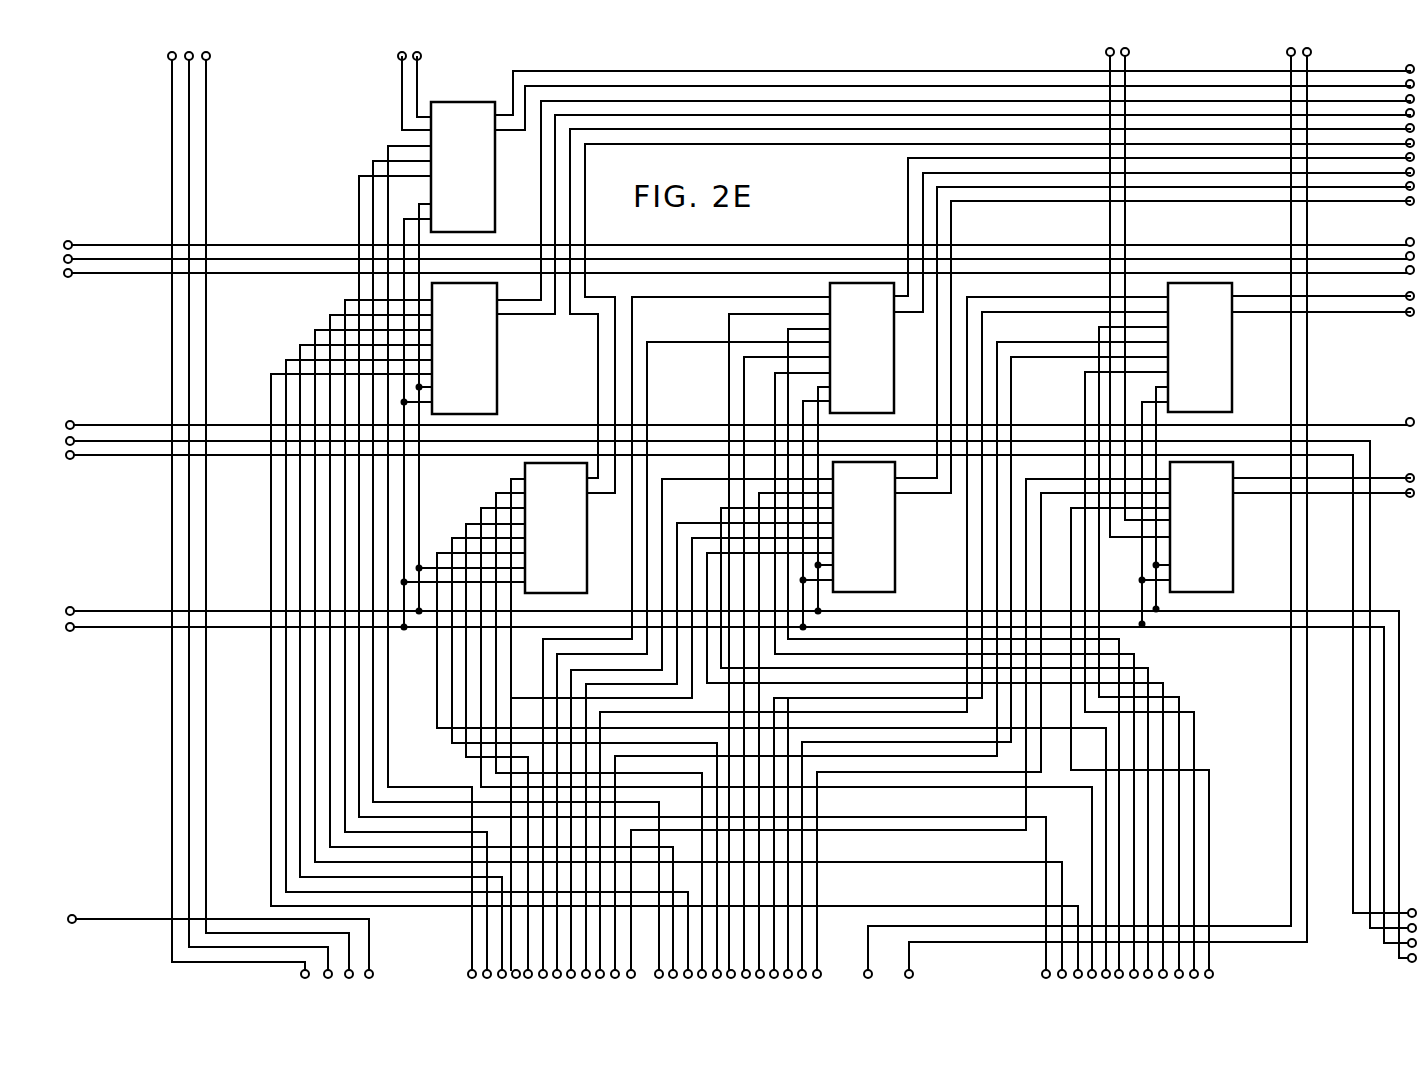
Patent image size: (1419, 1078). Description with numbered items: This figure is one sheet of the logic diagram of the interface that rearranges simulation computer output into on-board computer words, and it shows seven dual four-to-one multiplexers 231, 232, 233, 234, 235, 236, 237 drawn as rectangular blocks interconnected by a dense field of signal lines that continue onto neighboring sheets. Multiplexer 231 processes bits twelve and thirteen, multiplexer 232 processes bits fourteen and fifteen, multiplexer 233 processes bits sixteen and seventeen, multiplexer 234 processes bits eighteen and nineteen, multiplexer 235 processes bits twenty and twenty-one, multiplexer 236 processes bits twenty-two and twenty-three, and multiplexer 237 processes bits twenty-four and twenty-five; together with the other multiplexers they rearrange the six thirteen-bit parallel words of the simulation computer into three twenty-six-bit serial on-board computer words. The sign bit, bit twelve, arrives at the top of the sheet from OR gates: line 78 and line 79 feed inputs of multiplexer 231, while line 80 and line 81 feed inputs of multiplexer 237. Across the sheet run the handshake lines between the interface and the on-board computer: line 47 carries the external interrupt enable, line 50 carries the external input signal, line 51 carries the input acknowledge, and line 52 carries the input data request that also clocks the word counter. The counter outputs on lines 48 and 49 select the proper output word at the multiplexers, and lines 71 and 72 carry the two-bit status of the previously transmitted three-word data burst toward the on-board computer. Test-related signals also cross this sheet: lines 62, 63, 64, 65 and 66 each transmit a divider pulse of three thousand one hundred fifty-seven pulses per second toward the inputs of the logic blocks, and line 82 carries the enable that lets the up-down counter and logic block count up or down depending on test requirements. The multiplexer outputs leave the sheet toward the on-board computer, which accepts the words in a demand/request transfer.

The multiplexer 231 is at (458, 110).
The multiplexer 232 is at (488, 298).
The multiplexer 233 is at (524, 474).
The multiplexer 234 is at (832, 292).
The multiplexer 235 is at (892, 474).
The multiplexer 236 is at (1230, 298).
The multiplexer 237 is at (1232, 482).
The line 47 is at (78, 414).
The line 48 is at (78, 600).
The line 49 is at (72, 631).
The line 50 is at (76, 234).
The line 51 is at (70, 277).
The line 52 is at (94, 258).
The line 62 is at (186, 62).
The line 63 is at (170, 60).
The line 64 is at (209, 60).
The line 65 is at (1310, 56).
The line 66 is at (1288, 56).
The line 71 is at (78, 432).
The line 72 is at (72, 459).
The line 78 is at (421, 60).
The line 79 is at (400, 60).
The line 80 is at (1128, 56).
The line 81 is at (1106, 56).
The line 82 is at (80, 908).